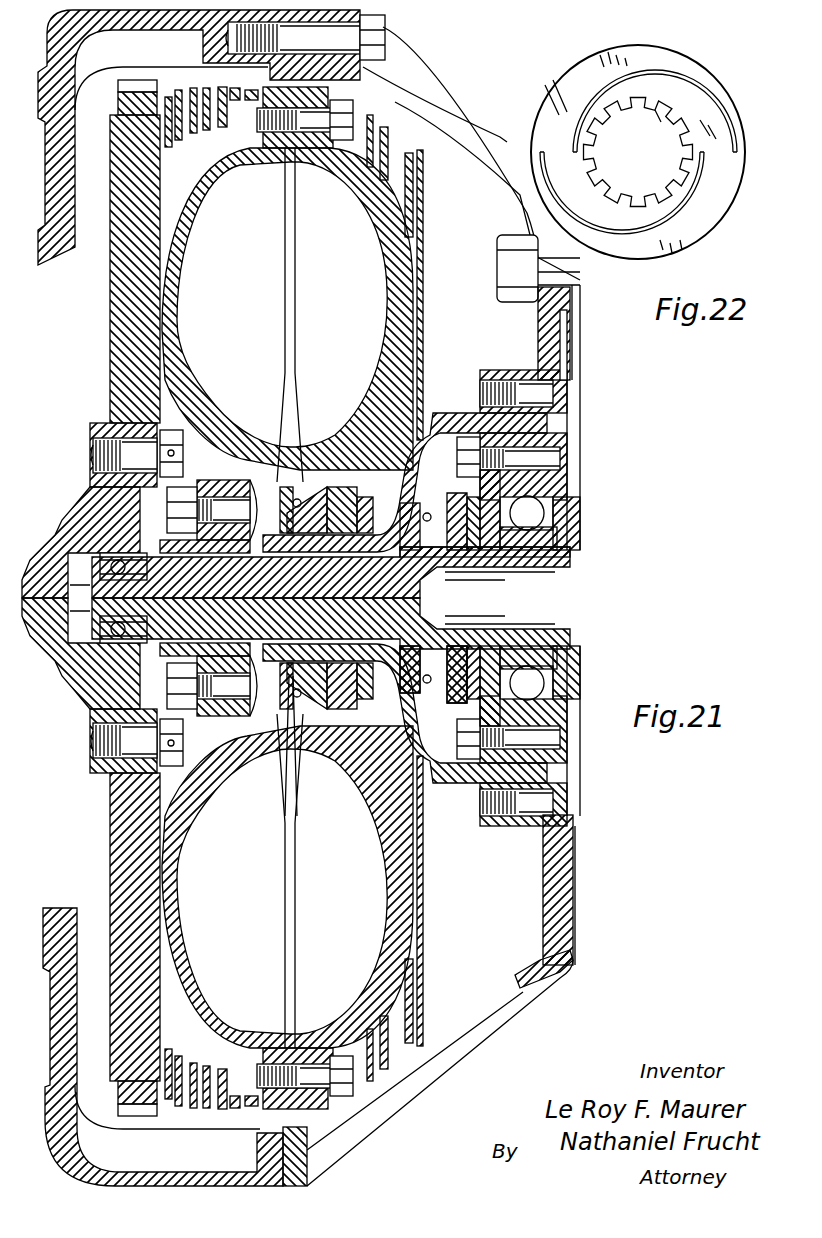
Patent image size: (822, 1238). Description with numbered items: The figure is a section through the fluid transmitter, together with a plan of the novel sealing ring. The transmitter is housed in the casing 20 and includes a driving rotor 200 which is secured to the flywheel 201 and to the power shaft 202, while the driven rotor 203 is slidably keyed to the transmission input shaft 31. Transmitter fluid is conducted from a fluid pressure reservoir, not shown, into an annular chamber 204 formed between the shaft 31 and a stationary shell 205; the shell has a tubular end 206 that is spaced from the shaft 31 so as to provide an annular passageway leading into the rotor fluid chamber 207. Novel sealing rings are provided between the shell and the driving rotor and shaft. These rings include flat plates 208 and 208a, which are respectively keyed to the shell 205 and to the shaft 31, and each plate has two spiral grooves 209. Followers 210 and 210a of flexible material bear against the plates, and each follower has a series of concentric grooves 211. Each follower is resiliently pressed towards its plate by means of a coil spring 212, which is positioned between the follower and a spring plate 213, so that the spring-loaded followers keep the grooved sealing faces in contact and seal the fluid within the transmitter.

In FIG. 21, the casing 20 is at (422, 73).
In FIG. 21, the transmission input shaft 31 is at (567, 557).
In FIG. 21, the driving rotor 200 is at (424, 256).
In FIG. 21, the flywheel 201 is at (133, 375).
In FIG. 21, the power shaft 202 is at (83, 677).
In FIG. 21, the driven rotor 203 is at (178, 302).
In FIG. 21, the annular chamber 204 is at (422, 533).
In FIG. 21, the stationary shell 205 is at (400, 433).
In FIG. 21, the tubular end 206 is at (318, 445).
In FIG. 21, the rotor fluid chamber 207 is at (313, 260).
In FIG. 21, the flat plate 208 is at (385, 500).
In FIG. 22, the flat plate 208 is at (692, 240).
In FIG. 21, the flat plate 208a is at (573, 550).
In FIG. 21, the spiral grooves 209 is at (527, 656).
In FIG. 22, the spiral grooves 209 is at (580, 110).
In FIG. 21, the follower 210 is at (307, 497).
In FIG. 21, the follower 210a is at (450, 697).
In FIG. 21, the concentric grooves 211 is at (463, 707).
In FIG. 21, the coil spring 212 is at (428, 513).
In FIG. 21, the spring plate 213 is at (277, 497).